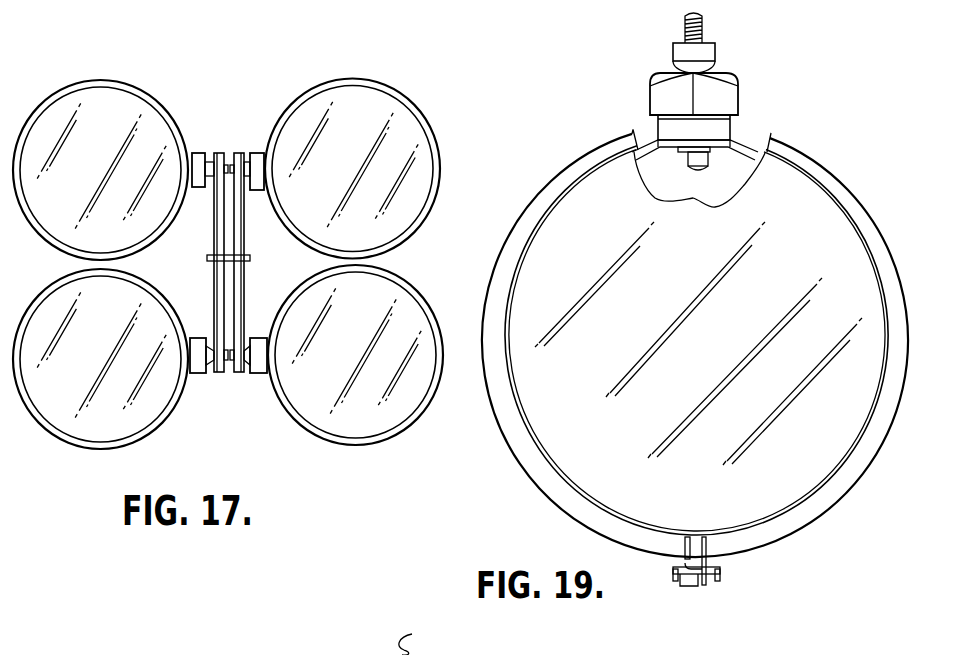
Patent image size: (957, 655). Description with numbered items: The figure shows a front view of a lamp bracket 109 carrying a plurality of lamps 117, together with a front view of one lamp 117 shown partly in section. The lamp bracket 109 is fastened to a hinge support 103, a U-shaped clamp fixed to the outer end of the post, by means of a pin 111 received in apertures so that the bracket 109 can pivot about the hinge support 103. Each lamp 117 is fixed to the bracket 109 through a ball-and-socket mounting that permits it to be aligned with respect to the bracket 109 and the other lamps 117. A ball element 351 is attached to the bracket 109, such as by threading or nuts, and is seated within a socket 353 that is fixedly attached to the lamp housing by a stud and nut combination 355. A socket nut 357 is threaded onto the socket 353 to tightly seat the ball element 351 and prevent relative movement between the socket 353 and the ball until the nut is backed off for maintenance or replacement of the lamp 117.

In FIG. 17, the lamp 117 is at (426, 96).
In FIG. 19, the lamp 117 is at (836, 165).
In FIG. 17, the hinge support 103 is at (216, 232).
In FIG. 17, the pin 111 is at (250, 259).
In FIG. 17, the lamp bracket 109 is at (229, 372).
In FIG. 17, the socket nut 357 is at (199, 152).
In FIG. 19, the socket nut 357 is at (733, 90).
In FIG. 17, the ball element 351 is at (255, 152).
In FIG. 19, the ball element 351 is at (680, 64).
In FIG. 19, the socket 353 is at (725, 128).
In FIG. 19, the stud and nut combination 355 is at (697, 160).